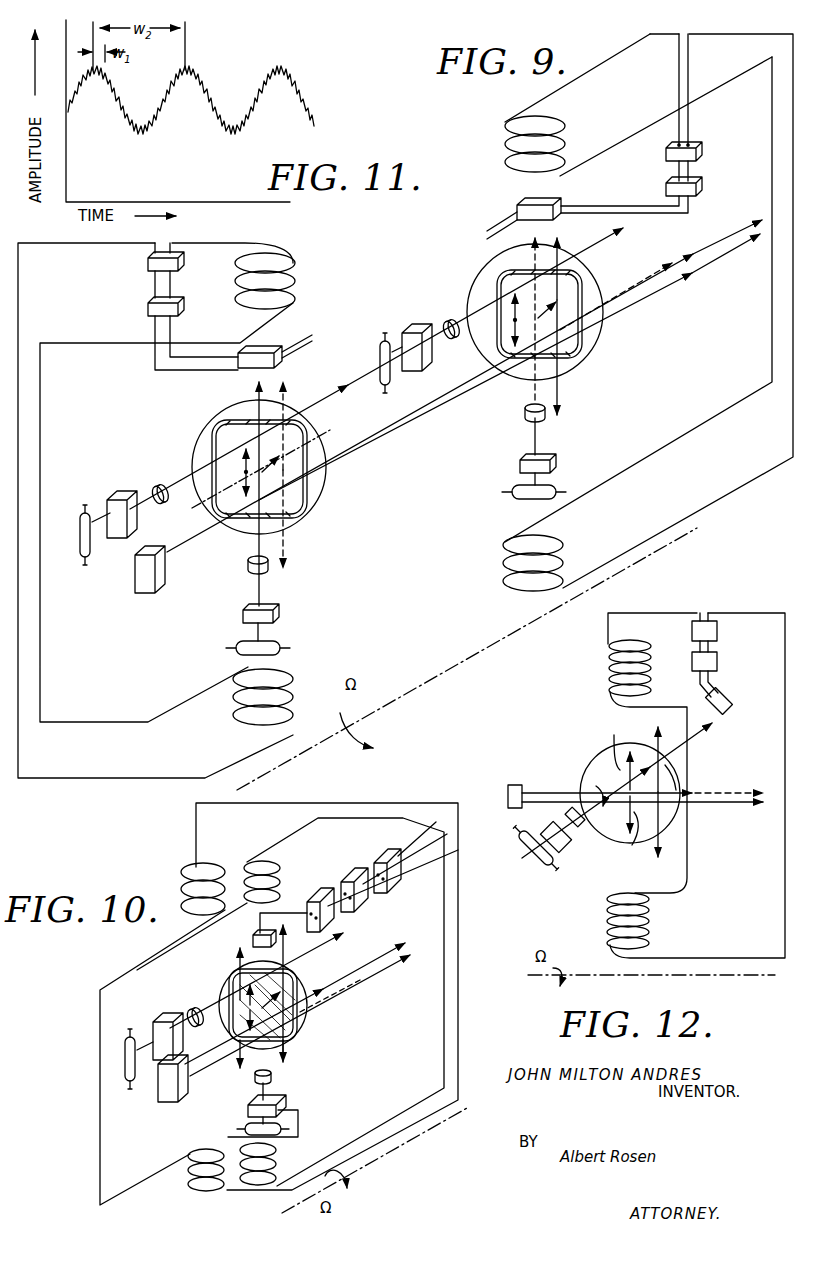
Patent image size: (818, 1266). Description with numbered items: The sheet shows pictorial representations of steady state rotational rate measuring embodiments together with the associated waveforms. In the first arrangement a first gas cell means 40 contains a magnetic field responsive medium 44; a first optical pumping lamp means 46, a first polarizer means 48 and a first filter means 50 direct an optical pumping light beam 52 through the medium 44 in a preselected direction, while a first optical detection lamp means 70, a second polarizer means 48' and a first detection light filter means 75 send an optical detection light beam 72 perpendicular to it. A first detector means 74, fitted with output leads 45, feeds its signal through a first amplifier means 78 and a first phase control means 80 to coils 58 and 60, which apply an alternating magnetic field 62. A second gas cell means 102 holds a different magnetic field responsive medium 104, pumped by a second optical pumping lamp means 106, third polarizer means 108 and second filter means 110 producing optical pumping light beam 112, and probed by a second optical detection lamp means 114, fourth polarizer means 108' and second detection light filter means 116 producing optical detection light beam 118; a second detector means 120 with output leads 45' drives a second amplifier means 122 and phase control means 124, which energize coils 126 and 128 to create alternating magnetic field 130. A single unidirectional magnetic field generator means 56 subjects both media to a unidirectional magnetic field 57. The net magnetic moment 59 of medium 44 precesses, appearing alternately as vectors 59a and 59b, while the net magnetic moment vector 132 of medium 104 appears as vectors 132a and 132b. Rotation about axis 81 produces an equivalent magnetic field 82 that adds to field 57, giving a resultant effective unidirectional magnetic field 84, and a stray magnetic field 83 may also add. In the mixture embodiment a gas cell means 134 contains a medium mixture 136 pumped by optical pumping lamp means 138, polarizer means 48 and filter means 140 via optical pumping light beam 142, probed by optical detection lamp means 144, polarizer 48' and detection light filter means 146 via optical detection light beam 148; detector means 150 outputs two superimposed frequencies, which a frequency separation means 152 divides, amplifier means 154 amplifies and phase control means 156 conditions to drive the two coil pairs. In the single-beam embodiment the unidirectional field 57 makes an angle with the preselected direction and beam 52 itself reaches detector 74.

In FIG. 9, the first gas cell means 40 is at (193, 447).
In FIG. 12, the first gas cell means 40 is at (593, 755).
In FIG. 9, the magnetic field responsive medium 44 is at (232, 432).
In FIG. 10, the magnetic field responsive medium 44 is at (300, 1030).
In FIG. 12, the magnetic field responsive medium 44 is at (670, 772).
In FIG. 9, the output leads 45 is at (313, 340).
In FIG. 9, the output leads 45' is at (481, 231).
In FIG. 9, the first optical pumping lamp means 46 is at (80, 566).
In FIG. 12, the first optical pumping lamp means 46 is at (522, 875).
In FIG. 9, the first polarizer means 48 is at (107, 502).
In FIG. 10, the first polarizer means 48 is at (145, 1035).
In FIG. 12, the first polarizer means 48 is at (531, 837).
In FIG. 9, the second polarizer means 48' is at (281, 616).
In FIG. 10, the second polarizer means 48' is at (291, 1107).
In FIG. 9, the first filter means 50 is at (157, 485).
In FIG. 12, the first filter means 50 is at (560, 825).
In FIG. 9, the optical pumping light beam 52 is at (335, 393).
In FIG. 12, the optical pumping light beam 52 is at (585, 850).
In FIG. 9, the unidirectional magnetic field generator means 56 is at (148, 592).
In FIG. 10, the unidirectional magnetic field generator means 56 is at (162, 1092).
In FIG. 12, the unidirectional magnetic field generator means 56 is at (516, 785).
In FIG. 9, the unidirectional magnetic field 57 is at (352, 450).
In FIG. 10, the unidirectional magnetic field 57 is at (205, 1080).
In FIG. 12, the unidirectional magnetic field 57 is at (533, 787).
In FIG. 9, the coil 58 is at (240, 706).
In FIG. 10, the coil 58 is at (192, 1177).
In FIG. 12, the coil 58 is at (650, 920).
In FIG. 9, the net magnetic moment 59 is at (275, 470).
In FIG. 10, the net magnetic moment 59 is at (290, 980).
In FIG. 12, the net magnetic moment 59 is at (637, 762).
In FIG. 9, the vector 59a is at (209, 478).
In FIG. 10, the vector 59a is at (245, 985).
In FIG. 12, the vector 59a is at (600, 743).
In FIG. 9, the vector 59b is at (225, 520).
In FIG. 12, the vector 59b is at (629, 837).
In FIG. 9, the coil 60 is at (298, 268).
In FIG. 10, the coil 60 is at (195, 872).
In FIG. 12, the coil 60 is at (650, 645).
In FIG. 9, the alternating magnetic field 62 is at (290, 542).
In FIG. 10, the alternating magnetic field 62 is at (236, 1076).
In FIG. 12, the alternating magnetic field 62 is at (680, 845).
In FIG. 9, the first optical detection lamp means 70 is at (280, 645).
In FIG. 9, the optical detection light beam 72 is at (256, 400).
In FIG. 9, the first detector means 74 is at (270, 351).
In FIG. 12, the first detector means 74 is at (733, 696).
In FIG. 9, the first detection light filter means 75 is at (246, 573).
In FIG. 9, the first amplifier means 78 is at (180, 311).
In FIG. 12, the first amplifier means 78 is at (717, 662).
In FIG. 9, the first phase control means 80 is at (180, 266).
In FIG. 12, the first phase control means 80 is at (717, 631).
In FIG. 9, the axis 81 is at (408, 678).
In FIG. 10, the axis 81 is at (405, 1158).
In FIG. 12, the axis 81 is at (650, 975).
In FIG. 9, the equivalent magnetic field 82 is at (661, 262).
In FIG. 10, the equivalent magnetic field 82 is at (335, 1000).
In FIG. 12, the equivalent magnetic field 82 is at (730, 788).
In FIG. 9, the stray magnetic field 83 is at (732, 235).
In FIG. 10, the stray magnetic field 83 is at (395, 955).
In FIG. 9, the resultant effective unidirectional magnetic field 84 is at (648, 300).
In FIG. 10, the resultant effective unidirectional magnetic field 84 is at (375, 985).
In FIG. 12, the resultant effective unidirectional magnetic field 84 is at (715, 810).
In FIG. 9, the second gas cell means 102 is at (470, 268).
In FIG. 9, the magnetic field responsive medium 104 is at (575, 272).
In FIG. 10, the magnetic field responsive medium 104 is at (222, 1003).
In FIG. 9, the second optical pumping lamp means 106 is at (382, 348).
In FIG. 9, the third polarizer means 108 is at (402, 336).
In FIG. 9, the fourth polarizer means 108' is at (565, 469).
In FIG. 9, the second filter means 110 is at (449, 325).
In FIG. 9, the optical pumping light beam 112 is at (600, 238).
In FIG. 9, the second optical detection lamp means 114 is at (515, 497).
In FIG. 9, the second detection light filter means 116 is at (565, 423).
In FIG. 9, the optical detection light beam 118 is at (522, 408).
In FIG. 9, the second detector means 120 is at (512, 201).
In FIG. 9, the second amplifier means 122 is at (700, 190).
In FIG. 9, the phase control means 124 is at (700, 155).
In FIG. 9, the coil 126 is at (565, 133).
In FIG. 10, the coil 126 is at (280, 872).
In FIG. 9, the coil 128 is at (565, 550).
In FIG. 10, the coil 128 is at (277, 1150).
In FIG. 9, the alternating magnetic field 130 is at (560, 390).
In FIG. 10, the alternating magnetic field 130 is at (300, 950).
In FIG. 9, the net magnetic moment vector 132 is at (525, 290).
In FIG. 10, the net magnetic moment vector 132 is at (290, 1058).
In FIG. 9, the vector 132a is at (505, 310).
In FIG. 9, the vector 132b is at (498, 355).
In FIG. 10, the vector 132b is at (230, 1040).
In FIG. 10, the gas cell means 134 is at (290, 1035).
In FIG. 10, the magnetic field responsive medium mixture 136 is at (298, 1015).
In FIG. 10, the optical pumping lamp means 138 is at (124, 1063).
In FIG. 10, the filter means 140 is at (188, 1012).
In FIG. 10, the optical pumping light beam 142 is at (330, 955).
In FIG. 10, the optical detection lamp means 144 is at (237, 1130).
In FIG. 10, the detection light filter means 146 is at (272, 1078).
In FIG. 10, the optical detection light beam 148 is at (236, 963).
In FIG. 10, the detector means 150 is at (251, 930).
In FIG. 10, the frequency separation means 152 is at (330, 930).
In FIG. 10, the amplifier means 154 is at (350, 872).
In FIG. 10, the phase control means 156 is at (395, 895).